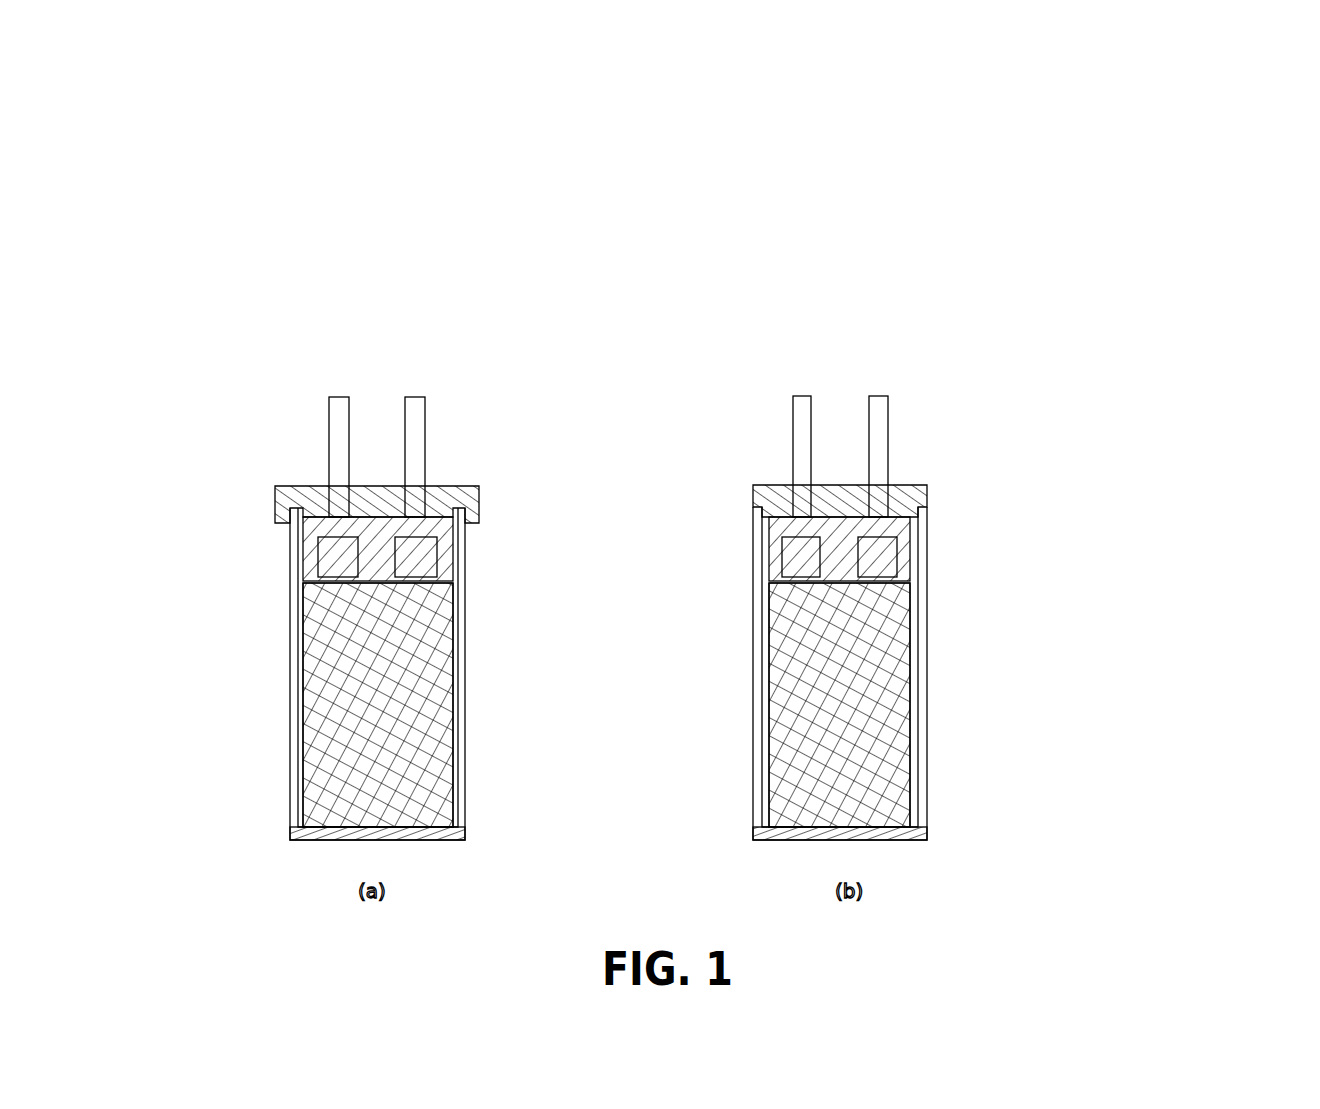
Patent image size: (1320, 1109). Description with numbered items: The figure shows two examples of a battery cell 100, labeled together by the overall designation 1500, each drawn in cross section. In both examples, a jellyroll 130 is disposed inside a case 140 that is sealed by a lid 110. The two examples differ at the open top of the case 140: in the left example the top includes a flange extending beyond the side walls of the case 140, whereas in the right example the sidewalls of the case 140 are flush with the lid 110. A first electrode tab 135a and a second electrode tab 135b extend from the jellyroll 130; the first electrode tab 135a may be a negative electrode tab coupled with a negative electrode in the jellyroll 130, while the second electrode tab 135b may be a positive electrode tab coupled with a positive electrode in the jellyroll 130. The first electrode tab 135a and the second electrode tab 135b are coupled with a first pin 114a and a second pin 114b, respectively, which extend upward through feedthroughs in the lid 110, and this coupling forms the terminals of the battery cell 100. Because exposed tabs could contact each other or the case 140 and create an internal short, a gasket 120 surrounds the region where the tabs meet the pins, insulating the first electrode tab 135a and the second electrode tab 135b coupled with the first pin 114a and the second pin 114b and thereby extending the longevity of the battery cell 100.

The battery cell 100 is at (287, 448).
The lid 110 is at (449, 483).
The first pin 114a is at (333, 405).
The second pin 114b is at (416, 408).
The gasket 120 is at (462, 552).
The jellyroll 130 is at (455, 672).
The first electrode tab 135a is at (333, 555).
The second electrode tab 135b is at (418, 553).
The case 140 is at (468, 728).
The battery cell configurations 1500 is at (1145, 160).